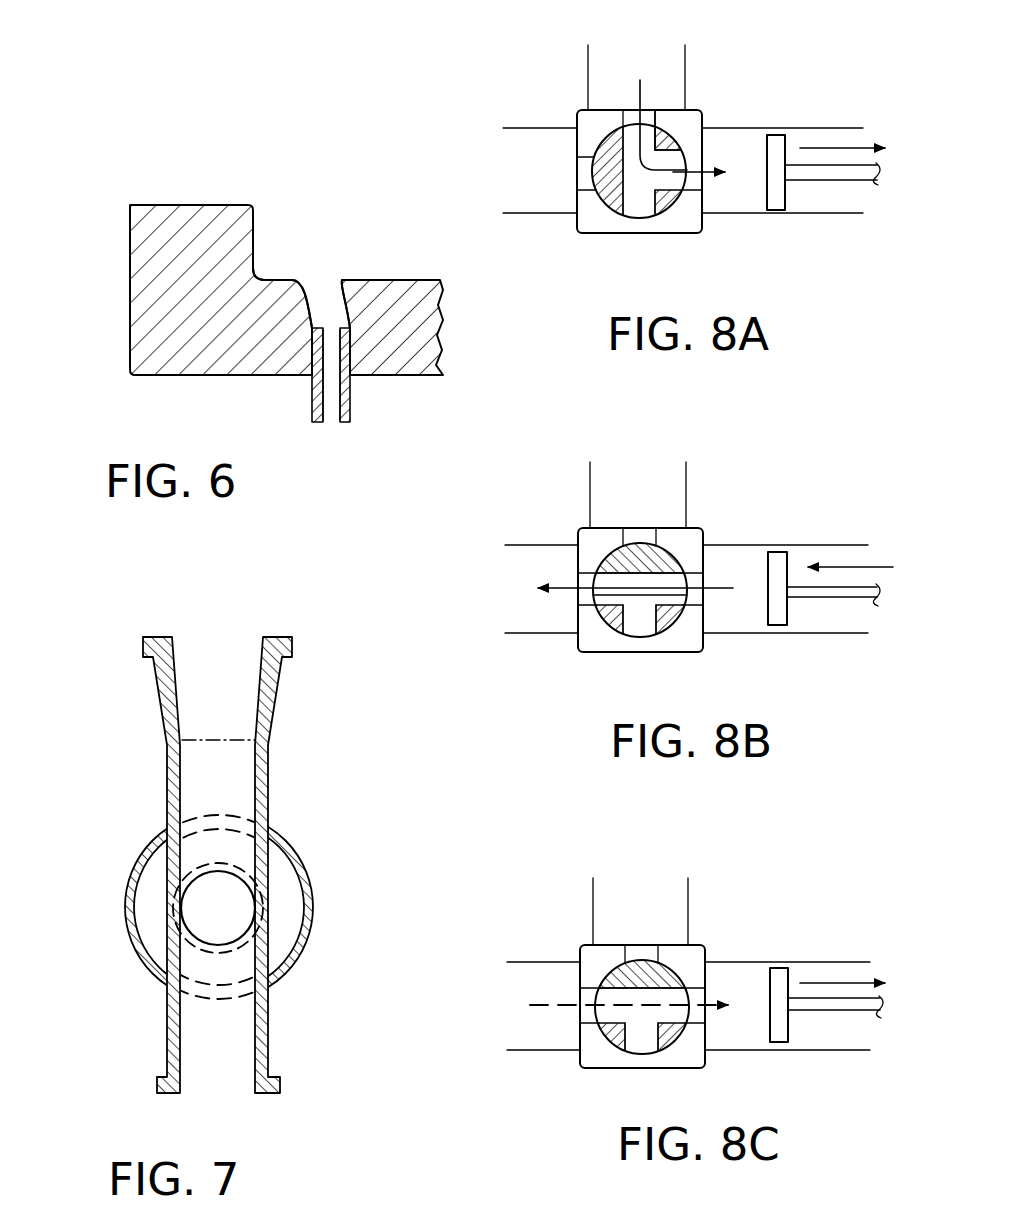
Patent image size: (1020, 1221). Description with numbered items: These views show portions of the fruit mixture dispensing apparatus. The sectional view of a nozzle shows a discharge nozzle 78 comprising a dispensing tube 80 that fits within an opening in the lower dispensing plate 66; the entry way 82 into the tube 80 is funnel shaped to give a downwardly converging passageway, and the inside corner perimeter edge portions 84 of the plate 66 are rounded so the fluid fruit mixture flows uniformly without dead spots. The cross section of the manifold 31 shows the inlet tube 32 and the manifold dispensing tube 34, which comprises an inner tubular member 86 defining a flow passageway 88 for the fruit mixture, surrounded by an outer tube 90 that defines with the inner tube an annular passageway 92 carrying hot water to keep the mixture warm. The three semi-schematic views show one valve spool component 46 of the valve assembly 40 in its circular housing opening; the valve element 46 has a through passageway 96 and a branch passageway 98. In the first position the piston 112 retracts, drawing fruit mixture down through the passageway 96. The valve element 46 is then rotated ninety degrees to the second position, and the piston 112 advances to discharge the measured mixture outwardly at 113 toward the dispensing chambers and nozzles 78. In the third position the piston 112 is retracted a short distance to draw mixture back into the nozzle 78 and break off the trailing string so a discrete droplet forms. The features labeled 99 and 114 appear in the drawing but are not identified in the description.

In FIG. 7, the manifold 31 is at (241, 865).
In FIG. 7, the inlet tube 32 is at (166, 762).
In FIG. 7, the manifold dispensing tube 34 is at (316, 897).
In FIG. 8A, the valve assembly 40 is at (559, 94).
In FIG. 8B, the valve assembly 40 is at (561, 523).
In FIG. 8C, the valve assembly 40 is at (566, 931).
In FIG. 8A, the valve spool component 46 is at (597, 148).
In FIG. 8B, the valve spool component 46 is at (683, 548).
In FIG. 8C, the valve spool component 46 is at (642, 1010).
In FIG. 6, the dispensing plate 66 is at (140, 283).
In FIG. 6, the discharge nozzle 78 is at (332, 430).
In FIG. 6, the dispensing tube 80 is at (311, 392).
In FIG. 6, the entry way 82 is at (343, 288).
In FIG. 6, the inside corner perimeter edge portions 84 is at (263, 272).
In FIG. 7, the inner tubular member 86 is at (242, 872).
In FIG. 7, the flow passageway 88 is at (228, 937).
In FIG. 7, the outer tube 90 is at (142, 970).
In FIG. 7, the annular passageway 92 is at (285, 927).
In FIG. 8A, the through passageway 96 is at (642, 204).
In FIG. 8B, the through passageway 96 is at (620, 597).
In FIG. 8C, the through passageway 96 is at (659, 1013).
In FIG. 8A, the branch passageway 98 is at (677, 163).
In FIG. 8A, the port 99 is at (678, 201).
In FIG. 8A, the piston 112 is at (773, 147).
In FIG. 8B, the piston 112 is at (790, 615).
In FIG. 8C, the piston 112 is at (795, 1033).
In FIG. 8B, the outward discharge location 113 is at (585, 597).
In FIG. 8A, the chamber 114 is at (753, 192).
In FIG. 8C, the chamber 114 is at (743, 983).